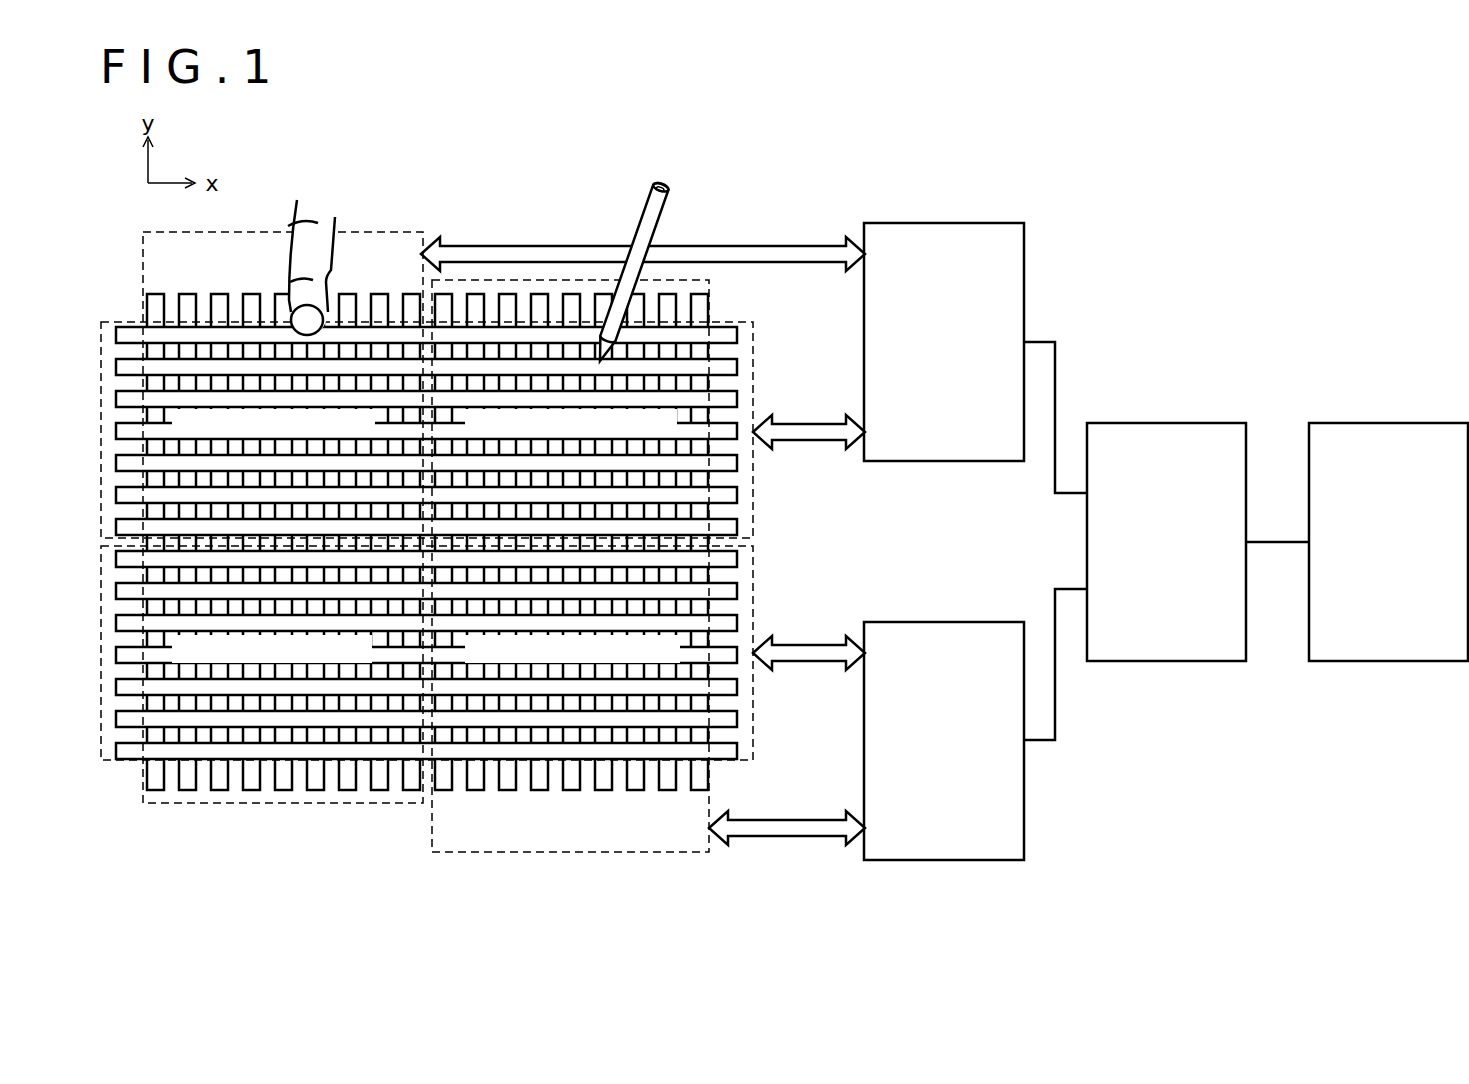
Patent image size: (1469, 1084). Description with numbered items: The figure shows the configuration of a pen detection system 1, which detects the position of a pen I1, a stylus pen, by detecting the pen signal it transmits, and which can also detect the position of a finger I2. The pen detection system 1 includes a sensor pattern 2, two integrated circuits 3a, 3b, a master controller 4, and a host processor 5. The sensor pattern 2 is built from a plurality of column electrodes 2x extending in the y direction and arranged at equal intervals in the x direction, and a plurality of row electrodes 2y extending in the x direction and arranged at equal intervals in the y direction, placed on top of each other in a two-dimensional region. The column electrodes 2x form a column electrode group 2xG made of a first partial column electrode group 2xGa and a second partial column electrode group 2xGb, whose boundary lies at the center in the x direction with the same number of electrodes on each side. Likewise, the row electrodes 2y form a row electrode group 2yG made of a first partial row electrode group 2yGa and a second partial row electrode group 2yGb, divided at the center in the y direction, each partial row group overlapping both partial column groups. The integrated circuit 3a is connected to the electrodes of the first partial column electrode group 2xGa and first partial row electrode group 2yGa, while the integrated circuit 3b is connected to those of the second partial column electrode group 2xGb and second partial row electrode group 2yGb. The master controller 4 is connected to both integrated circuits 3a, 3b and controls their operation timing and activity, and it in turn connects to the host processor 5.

The pen detection system 1 is at (1165, 242).
The sensor pattern 2 is at (522, 598).
The column electrodes 2x is at (187, 790).
The row electrodes 2y is at (123, 760).
The column electrode group 2xG is at (426, 598).
The first partial column electrode group 2xGa is at (388, 803).
The second partial column electrode group 2xGb is at (569, 598).
The row electrode group 2yG is at (522, 541).
The first partial row electrode group 2yGa is at (753, 517).
The second partial row electrode group 2yGb is at (753, 565).
The integrated circuit 3a is at (1024, 303).
The integrated circuit 3b is at (1024, 781).
The master controller 4 is at (1166, 661).
The host processor 5 is at (1388, 661).
The pen I1 is at (650, 210).
The finger I2 is at (317, 214).